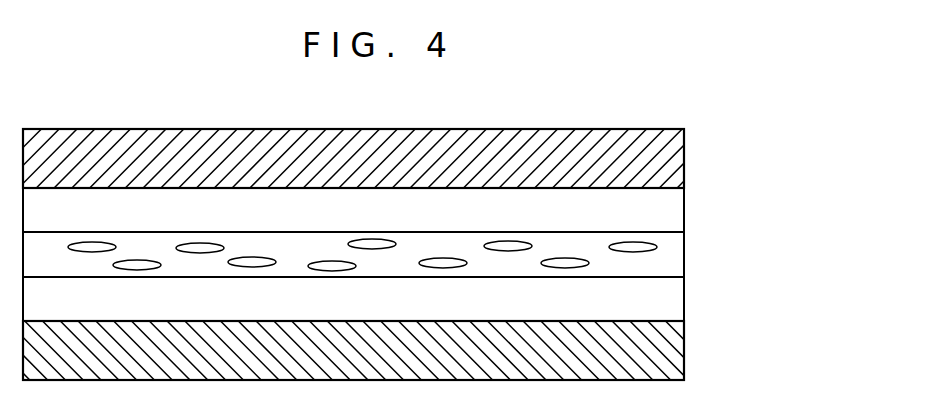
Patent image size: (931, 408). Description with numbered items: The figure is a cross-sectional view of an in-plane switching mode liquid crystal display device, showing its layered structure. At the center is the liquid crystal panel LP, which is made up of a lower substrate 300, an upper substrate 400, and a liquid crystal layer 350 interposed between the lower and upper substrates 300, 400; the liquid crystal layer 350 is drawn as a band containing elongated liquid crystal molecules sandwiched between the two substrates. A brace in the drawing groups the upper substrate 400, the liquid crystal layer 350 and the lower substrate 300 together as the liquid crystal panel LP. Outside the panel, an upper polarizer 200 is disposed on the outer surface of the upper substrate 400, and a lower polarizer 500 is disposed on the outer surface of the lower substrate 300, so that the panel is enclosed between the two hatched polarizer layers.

The upper polarizer 200 is at (677, 161).
The upper substrate 400 is at (677, 210).
The liquid crystal layer 350 is at (677, 256).
The lower substrate 300 is at (677, 301).
The lower polarizer 500 is at (677, 352).
The liquid crystal panel LP is at (813, 200).